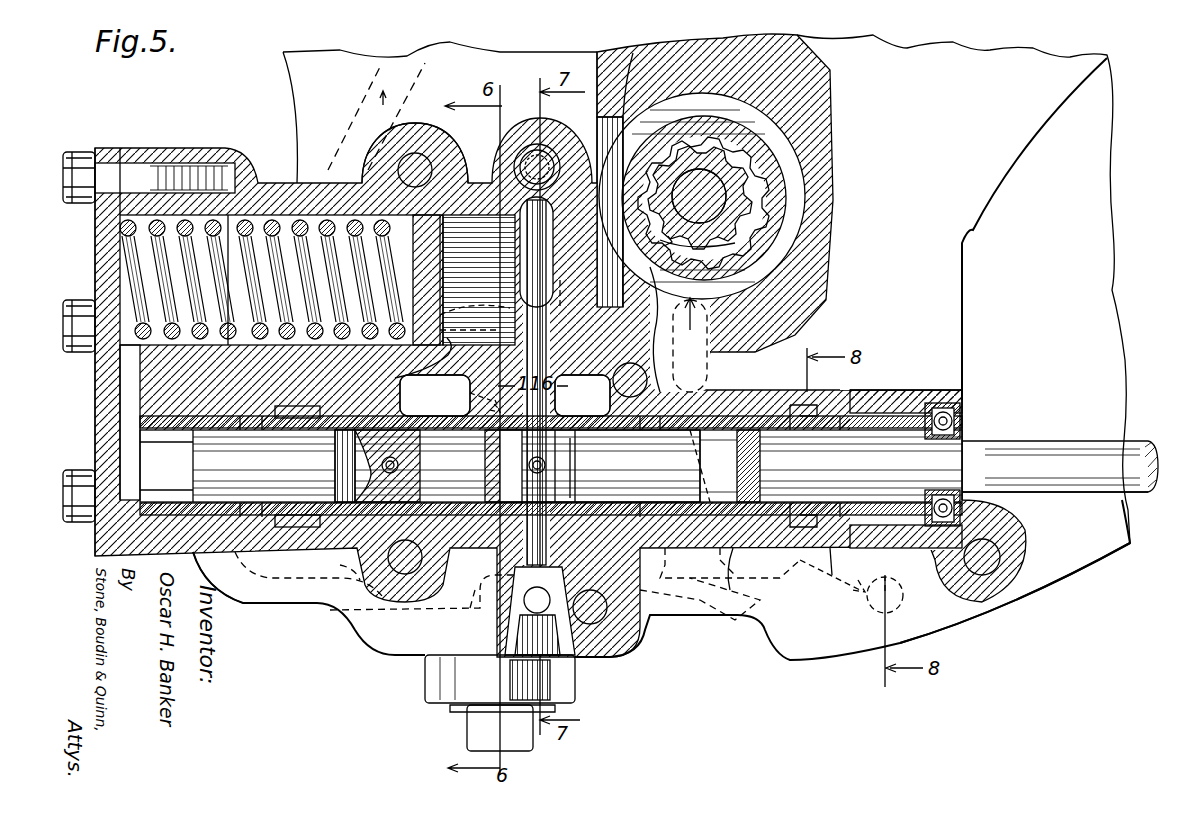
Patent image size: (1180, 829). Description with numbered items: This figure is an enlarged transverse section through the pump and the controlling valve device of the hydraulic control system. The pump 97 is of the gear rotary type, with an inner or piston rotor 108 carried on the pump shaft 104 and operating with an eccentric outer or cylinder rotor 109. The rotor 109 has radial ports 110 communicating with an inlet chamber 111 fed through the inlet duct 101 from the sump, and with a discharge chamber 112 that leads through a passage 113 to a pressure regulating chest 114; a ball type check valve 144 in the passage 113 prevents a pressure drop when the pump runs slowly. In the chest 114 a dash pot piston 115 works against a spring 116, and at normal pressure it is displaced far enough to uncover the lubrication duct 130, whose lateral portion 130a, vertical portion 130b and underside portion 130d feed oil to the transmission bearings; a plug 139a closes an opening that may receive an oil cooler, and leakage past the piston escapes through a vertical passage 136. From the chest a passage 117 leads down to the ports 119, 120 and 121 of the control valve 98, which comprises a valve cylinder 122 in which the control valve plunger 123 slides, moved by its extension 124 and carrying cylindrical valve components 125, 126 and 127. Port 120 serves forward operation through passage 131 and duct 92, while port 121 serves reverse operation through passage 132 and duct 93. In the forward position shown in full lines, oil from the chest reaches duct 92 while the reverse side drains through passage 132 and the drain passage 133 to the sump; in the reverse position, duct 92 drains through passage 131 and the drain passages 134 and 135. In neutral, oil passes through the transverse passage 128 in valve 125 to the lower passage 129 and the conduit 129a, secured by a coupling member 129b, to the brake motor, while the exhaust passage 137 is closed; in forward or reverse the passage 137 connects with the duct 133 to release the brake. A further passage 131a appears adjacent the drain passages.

The duct 92 is at (952, 616).
The duct 93 is at (345, 100).
The pump 97 is at (813, 217).
The controlling valve device 98 is at (377, 560).
The inlet duct 101 is at (708, 360).
The pump shaft 104 is at (742, 243).
The inner rotor 108 is at (762, 258).
The outer rotor 109 is at (750, 270).
The radial ports 110 is at (760, 285).
The inlet chamber 111 is at (735, 312).
The discharge chamber 112 is at (642, 62).
The passage 113 is at (500, 128).
The pressure regulating chest 114 is at (470, 230).
The dash pot piston 115 is at (430, 300).
The spring 116 is at (124, 282).
The passage 117 is at (545, 320).
The port 119 is at (455, 466).
The port 120 is at (582, 395).
The port 121 is at (450, 395).
The valve cylinder 122 is at (960, 420).
The control valve plunger 123 is at (1088, 451).
The extension 124 is at (1101, 493).
The valve component 125 is at (590, 460).
The valve component 126 is at (760, 458).
The valve component 127 is at (150, 458).
The transverse passage 128 is at (468, 548).
The lower passage 129 is at (700, 599).
The conduit 129a is at (565, 690).
The coupling member 129b is at (510, 660).
The lubrication duct 130 is at (465, 310).
The lateral duct portion 130a is at (564, 285).
The vertical duct portion 130b is at (425, 607).
The duct portion 130d is at (470, 612).
The passage 131 is at (795, 575).
The passage 131a is at (754, 576).
The passage 132 is at (445, 340).
The drain passage 133 is at (278, 540).
The drain passage 134 is at (821, 561).
The drain passage 135 is at (890, 548).
The vertical passage 136 is at (128, 400).
The exhaust passage 137 is at (310, 576).
The plug 139a is at (476, 726).
The check valve 144 is at (540, 160).